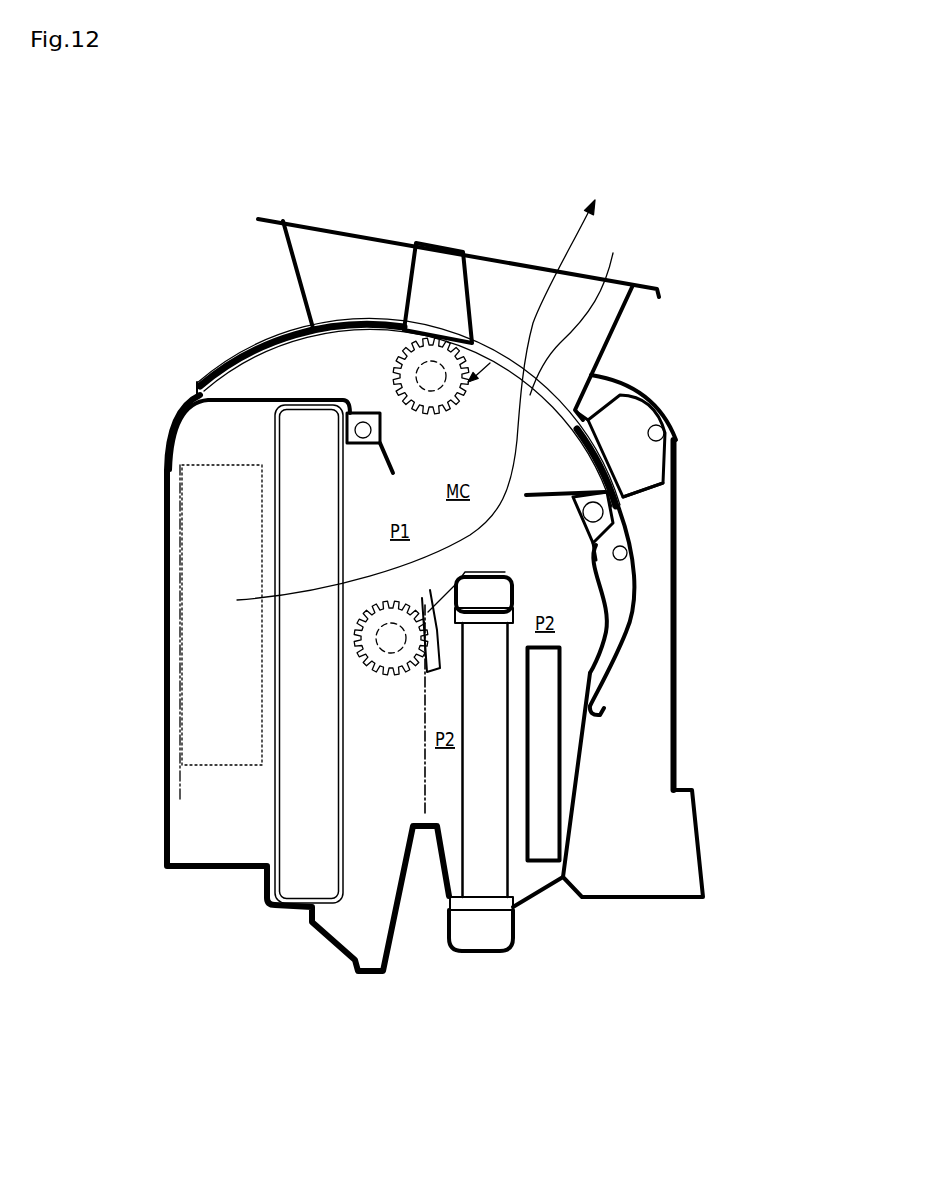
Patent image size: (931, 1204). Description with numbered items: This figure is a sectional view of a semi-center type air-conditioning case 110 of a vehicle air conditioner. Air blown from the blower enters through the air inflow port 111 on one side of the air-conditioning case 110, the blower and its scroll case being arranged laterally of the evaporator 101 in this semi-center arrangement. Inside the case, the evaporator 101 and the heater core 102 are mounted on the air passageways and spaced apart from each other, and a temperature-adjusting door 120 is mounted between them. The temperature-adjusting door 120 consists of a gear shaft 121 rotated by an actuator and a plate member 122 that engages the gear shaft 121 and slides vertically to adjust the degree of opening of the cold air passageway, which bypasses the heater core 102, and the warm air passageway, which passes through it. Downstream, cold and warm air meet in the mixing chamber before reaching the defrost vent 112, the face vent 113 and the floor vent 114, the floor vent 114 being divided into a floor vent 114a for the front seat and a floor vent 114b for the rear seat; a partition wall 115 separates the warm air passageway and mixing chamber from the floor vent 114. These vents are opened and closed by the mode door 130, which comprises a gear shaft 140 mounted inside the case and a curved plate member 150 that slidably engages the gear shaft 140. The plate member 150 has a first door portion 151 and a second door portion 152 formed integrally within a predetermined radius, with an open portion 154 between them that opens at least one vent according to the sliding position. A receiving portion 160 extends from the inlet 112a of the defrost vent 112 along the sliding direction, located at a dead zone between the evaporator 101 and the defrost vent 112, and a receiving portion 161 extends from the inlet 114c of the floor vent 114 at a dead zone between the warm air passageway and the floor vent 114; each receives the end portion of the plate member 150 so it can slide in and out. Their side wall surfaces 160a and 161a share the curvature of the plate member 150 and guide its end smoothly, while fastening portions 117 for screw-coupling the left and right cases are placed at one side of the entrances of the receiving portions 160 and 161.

The evaporator 101 is at (297, 883).
The heater core 102 is at (483, 927).
The air-conditioning case 110 is at (158, 553).
The air inflow port 111 is at (178, 641).
The defrost vent 112 is at (357, 253).
The inlet of the defrost vent 112a is at (322, 322).
The face vent 113 is at (505, 290).
The floor vent 114 is at (600, 393).
The floor vent for the front seat 114a is at (662, 432).
The floor vent for the rear seat 114b is at (680, 847).
The inlet of the floor vent 114c is at (655, 465).
The partition wall 115 is at (590, 742).
The fastening portion 117 is at (620, 540).
The temperature-adjusting door 120 is at (283, 693).
The gear shaft 121 is at (368, 667).
The plate member 122 is at (423, 698).
The mode door 130 is at (446, 276).
The gear shaft 140 is at (500, 363).
The plate member 150 is at (415, 243).
The first door portion 151 is at (347, 327).
The second door portion 152 is at (653, 417).
The open portion 154 is at (579, 311).
The receiving portion 160 is at (278, 376).
The side wall surface 160a is at (208, 382).
The receiving portion 161 is at (617, 572).
The side wall surface 161a is at (625, 558).